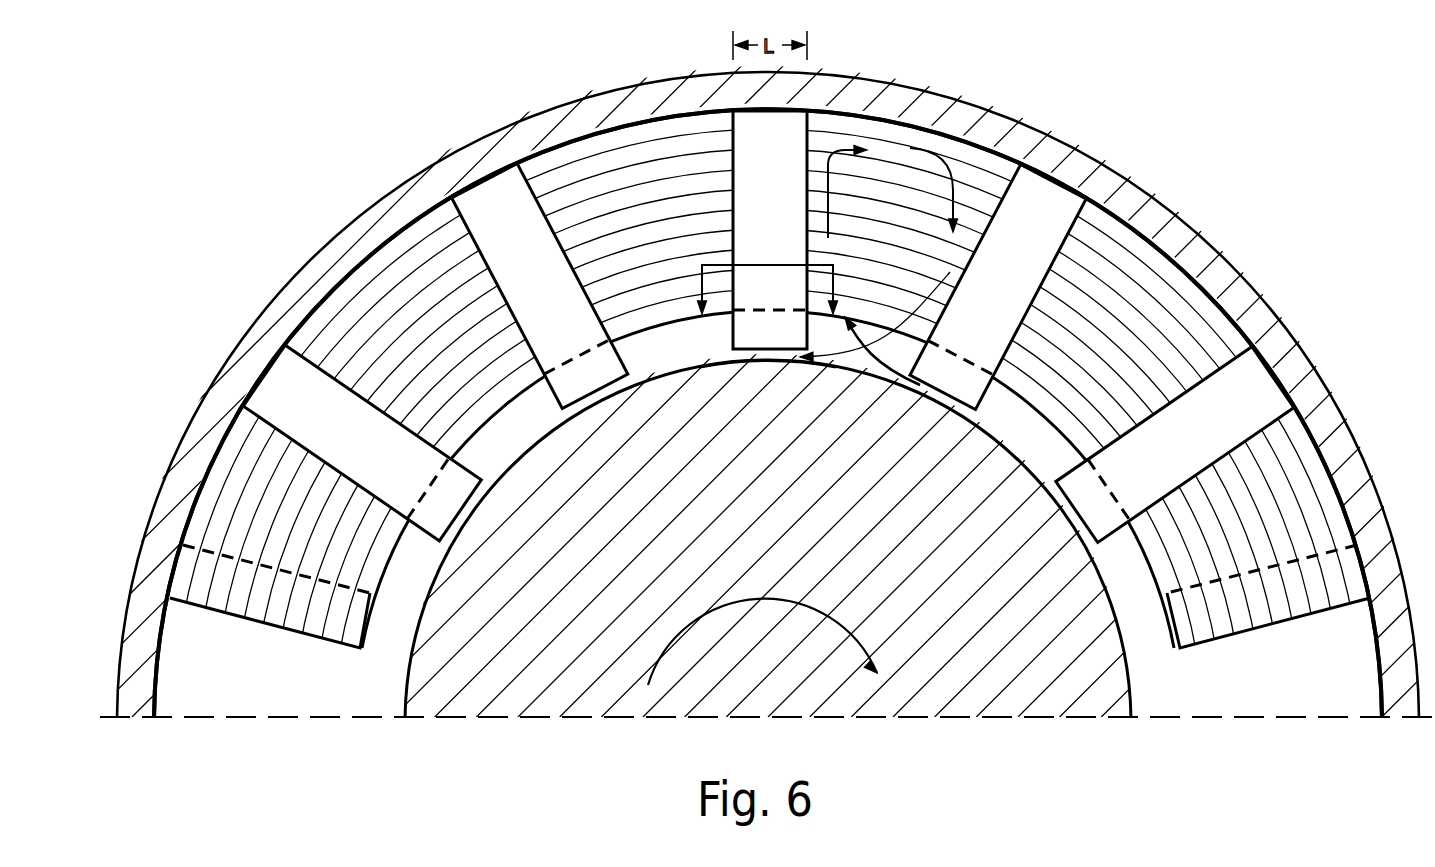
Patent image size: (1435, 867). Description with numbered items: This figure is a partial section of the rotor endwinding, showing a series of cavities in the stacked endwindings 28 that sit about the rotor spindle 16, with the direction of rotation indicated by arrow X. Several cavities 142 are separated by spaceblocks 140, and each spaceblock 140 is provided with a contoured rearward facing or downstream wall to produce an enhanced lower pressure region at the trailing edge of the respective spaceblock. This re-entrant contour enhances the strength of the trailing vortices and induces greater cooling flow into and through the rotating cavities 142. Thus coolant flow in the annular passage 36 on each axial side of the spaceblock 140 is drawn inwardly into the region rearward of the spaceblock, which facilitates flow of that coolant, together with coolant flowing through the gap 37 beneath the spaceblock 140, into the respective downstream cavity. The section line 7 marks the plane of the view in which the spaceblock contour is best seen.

The section line 7- 7 is at (767, 306).
The rotor spindle 16 is at (555, 695).
The stacked endwindings 28 is at (640, 337).
The annular passage 36 is at (1003, 432).
The gap 37 is at (765, 360).
The spaceblock 140 is at (495, 197).
The cavities 142 is at (633, 177).